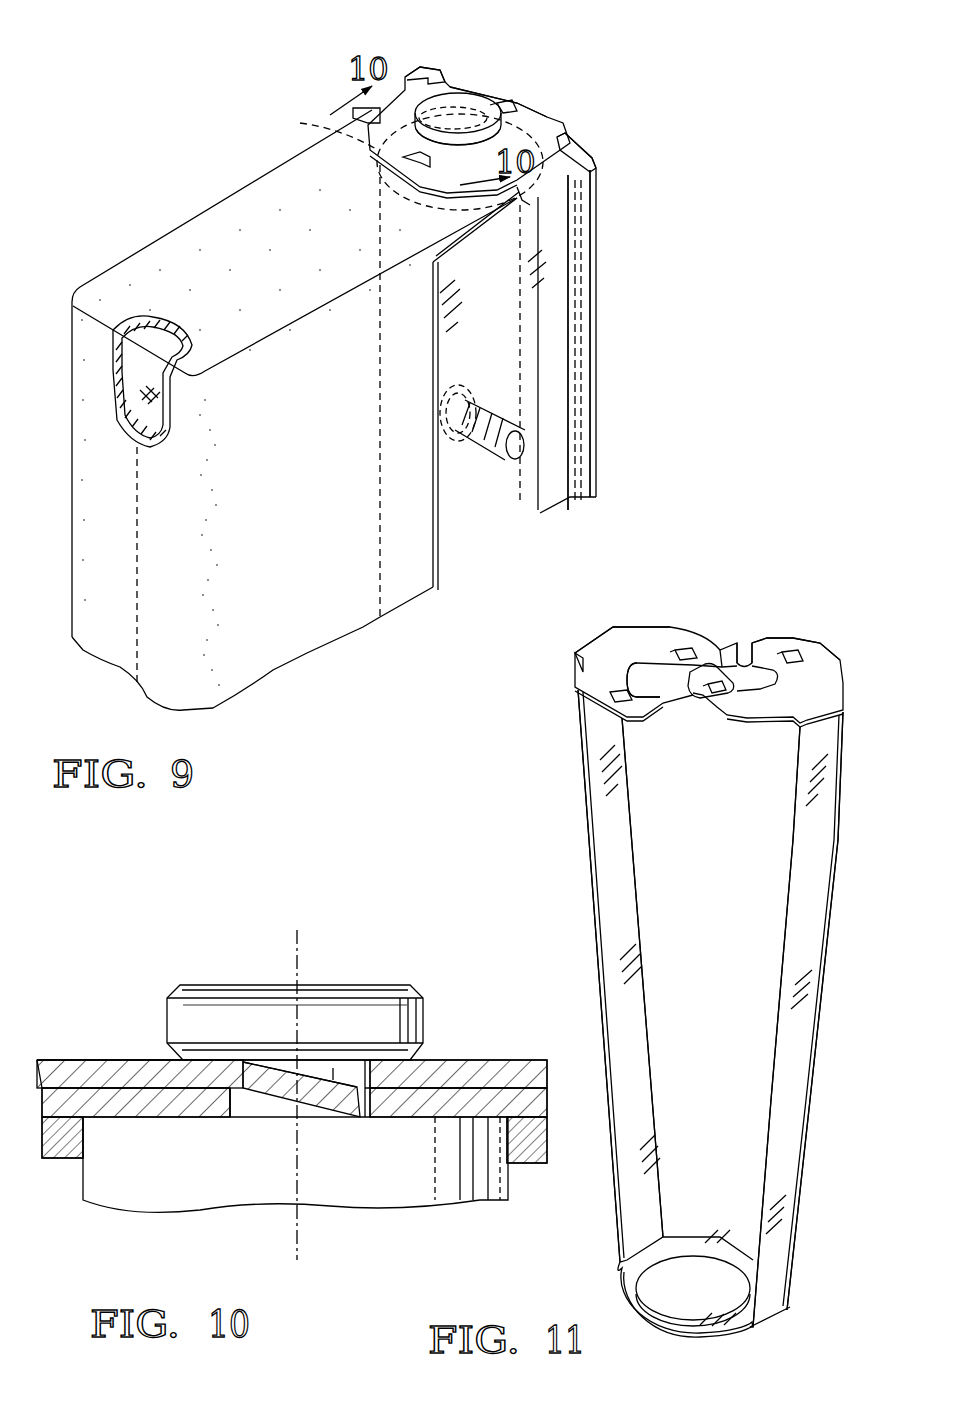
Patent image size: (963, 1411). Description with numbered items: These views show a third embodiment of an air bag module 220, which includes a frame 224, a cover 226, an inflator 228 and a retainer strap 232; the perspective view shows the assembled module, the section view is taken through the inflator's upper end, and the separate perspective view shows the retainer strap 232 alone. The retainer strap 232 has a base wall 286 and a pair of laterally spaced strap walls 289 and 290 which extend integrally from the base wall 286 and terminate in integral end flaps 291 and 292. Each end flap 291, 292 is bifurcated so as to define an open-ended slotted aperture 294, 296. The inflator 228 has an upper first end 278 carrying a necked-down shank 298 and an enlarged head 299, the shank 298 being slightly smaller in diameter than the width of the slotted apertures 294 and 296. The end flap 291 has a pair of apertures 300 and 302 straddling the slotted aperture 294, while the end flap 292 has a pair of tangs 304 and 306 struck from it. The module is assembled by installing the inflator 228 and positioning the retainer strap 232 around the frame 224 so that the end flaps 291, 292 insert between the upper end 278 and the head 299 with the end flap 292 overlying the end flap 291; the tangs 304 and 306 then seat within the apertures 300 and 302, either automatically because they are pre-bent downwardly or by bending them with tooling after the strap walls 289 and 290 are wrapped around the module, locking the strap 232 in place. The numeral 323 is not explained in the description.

In FIG. 9, the air bag module 220 is at (140, 238).
In FIG. 9, the frame 224 is at (598, 167).
In FIG. 9, the cover 226 is at (200, 222).
In FIG. 10, the cover 226 is at (525, 1150).
In FIG. 9, the inflator 228 is at (466, 95).
In FIG. 10, the inflator 228 is at (178, 985).
In FIG. 9, the retainer strap 232 is at (543, 103).
In FIG. 10, the retainer strap 232 is at (75, 1060).
In FIG. 9, the upper first end 278 is at (401, 155).
In FIG. 10, the upper first end 278 is at (395, 1178).
In FIG. 11, the base wall 286 is at (627, 1290).
In FIG. 11, the strap wall 289 is at (605, 853).
In FIG. 9, the strap wall 290 is at (557, 318).
In FIG. 11, the strap wall 290 is at (815, 890).
In FIG. 9, the end flap 291 is at (440, 80).
In FIG. 10, the end flap 291 is at (489, 1095).
In FIG. 11, the end flap 291 is at (625, 635).
In FIG. 9, the end flap 292 is at (552, 127).
In FIG. 10, the end flap 292 is at (441, 1063).
In FIG. 11, the end flap 292 is at (826, 680).
In FIG. 11, the slotted aperture 294 is at (652, 668).
In FIG. 11, the slotted aperture 296 is at (742, 648).
In FIG. 10, the necked-down shank 298 is at (255, 1105).
In FIG. 9, the enlarged head 299 is at (472, 110).
In FIG. 10, the enlarged head 299 is at (248, 1012).
In FIG. 10, the aperture 300 is at (360, 1100).
In FIG. 11, the aperture 300 is at (612, 697).
In FIG. 11, the aperture 302 is at (690, 652).
In FIG. 9, the tang 304 is at (420, 157).
In FIG. 10, the tang 304 is at (315, 1085).
In FIG. 11, the tang 304 is at (718, 690).
In FIG. 9, the tang 306 is at (500, 112).
In FIG. 11, the tang 306 is at (795, 655).
In FIG. 11, the plate portion 323 is at (850, 648).